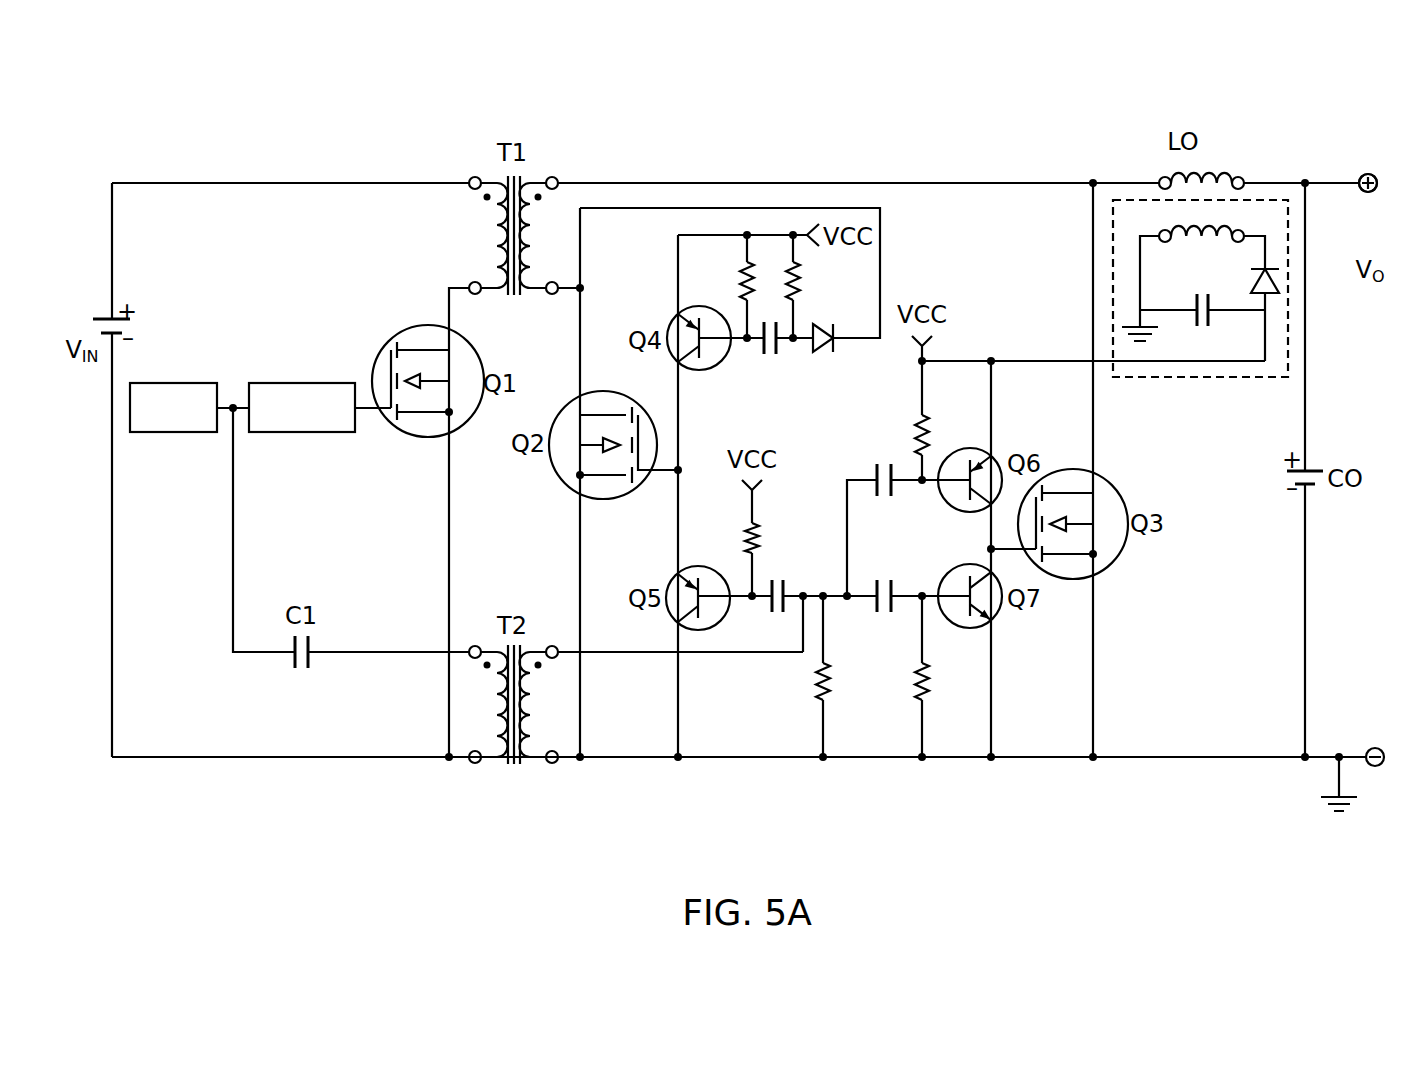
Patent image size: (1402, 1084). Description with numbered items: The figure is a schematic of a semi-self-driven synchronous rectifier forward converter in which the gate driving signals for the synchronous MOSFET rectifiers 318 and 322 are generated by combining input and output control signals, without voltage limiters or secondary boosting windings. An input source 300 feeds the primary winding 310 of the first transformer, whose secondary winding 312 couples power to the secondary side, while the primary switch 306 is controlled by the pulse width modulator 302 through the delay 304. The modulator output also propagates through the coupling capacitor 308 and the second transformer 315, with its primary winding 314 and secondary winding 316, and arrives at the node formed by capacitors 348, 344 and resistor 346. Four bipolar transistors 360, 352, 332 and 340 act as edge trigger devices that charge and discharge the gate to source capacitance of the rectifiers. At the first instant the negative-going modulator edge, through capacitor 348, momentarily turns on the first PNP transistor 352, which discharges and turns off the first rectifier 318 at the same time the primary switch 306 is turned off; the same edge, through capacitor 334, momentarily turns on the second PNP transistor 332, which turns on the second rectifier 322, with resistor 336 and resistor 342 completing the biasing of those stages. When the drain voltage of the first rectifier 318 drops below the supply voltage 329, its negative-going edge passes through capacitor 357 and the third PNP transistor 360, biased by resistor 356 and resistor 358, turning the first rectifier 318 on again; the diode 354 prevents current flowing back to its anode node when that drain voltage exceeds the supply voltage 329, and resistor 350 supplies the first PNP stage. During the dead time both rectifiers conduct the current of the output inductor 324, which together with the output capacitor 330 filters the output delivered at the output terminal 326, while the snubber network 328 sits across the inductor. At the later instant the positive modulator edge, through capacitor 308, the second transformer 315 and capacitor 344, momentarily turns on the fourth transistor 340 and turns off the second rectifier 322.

The DC input voltage source 300 is at (138, 322).
The PWM 302 is at (170, 434).
The delay 304 is at (300, 434).
The primary switch Q1 306 is at (403, 322).
The capacitor C1 308 is at (300, 676).
The primary winding of transformer T1 310 is at (470, 163).
The secondary winding of transformer T1 312 is at (556, 163).
The primary winding of transformer T2 314 is at (473, 770).
The transformer T2 315 is at (513, 770).
The secondary winding of transformer T2 316 is at (557, 770).
The synchronous MOSFET rectifier Q2 318 is at (570, 495).
The synchronous MOSFET rectifier Q3 322 is at (1105, 470).
The inductor 324 is at (1160, 163).
The positive output terminal 326 is at (1362, 170).
The snubber circuit 328 is at (1112, 245).
The VCC 329 is at (1260, 373).
The output capacitor CO 330 is at (1320, 455).
The PNP transistor Q6 332 is at (998, 442).
The capacitor 334 is at (885, 498).
The resistor 336 is at (929, 413).
The transistor Q7 340 is at (1000, 622).
The resistor 342 is at (910, 705).
The capacitor 344 is at (883, 620).
The resistor 346 is at (808, 705).
The capacitor 348 is at (777, 575).
The resistor 350 is at (760, 525).
The PNP transistor Q5 352 is at (672, 570).
The diode 354 is at (837, 352).
The resistor 356 is at (808, 283).
The capacitor 357 is at (771, 360).
The resistor 358 is at (738, 263).
The PNP transistor Q4 360 is at (672, 312).